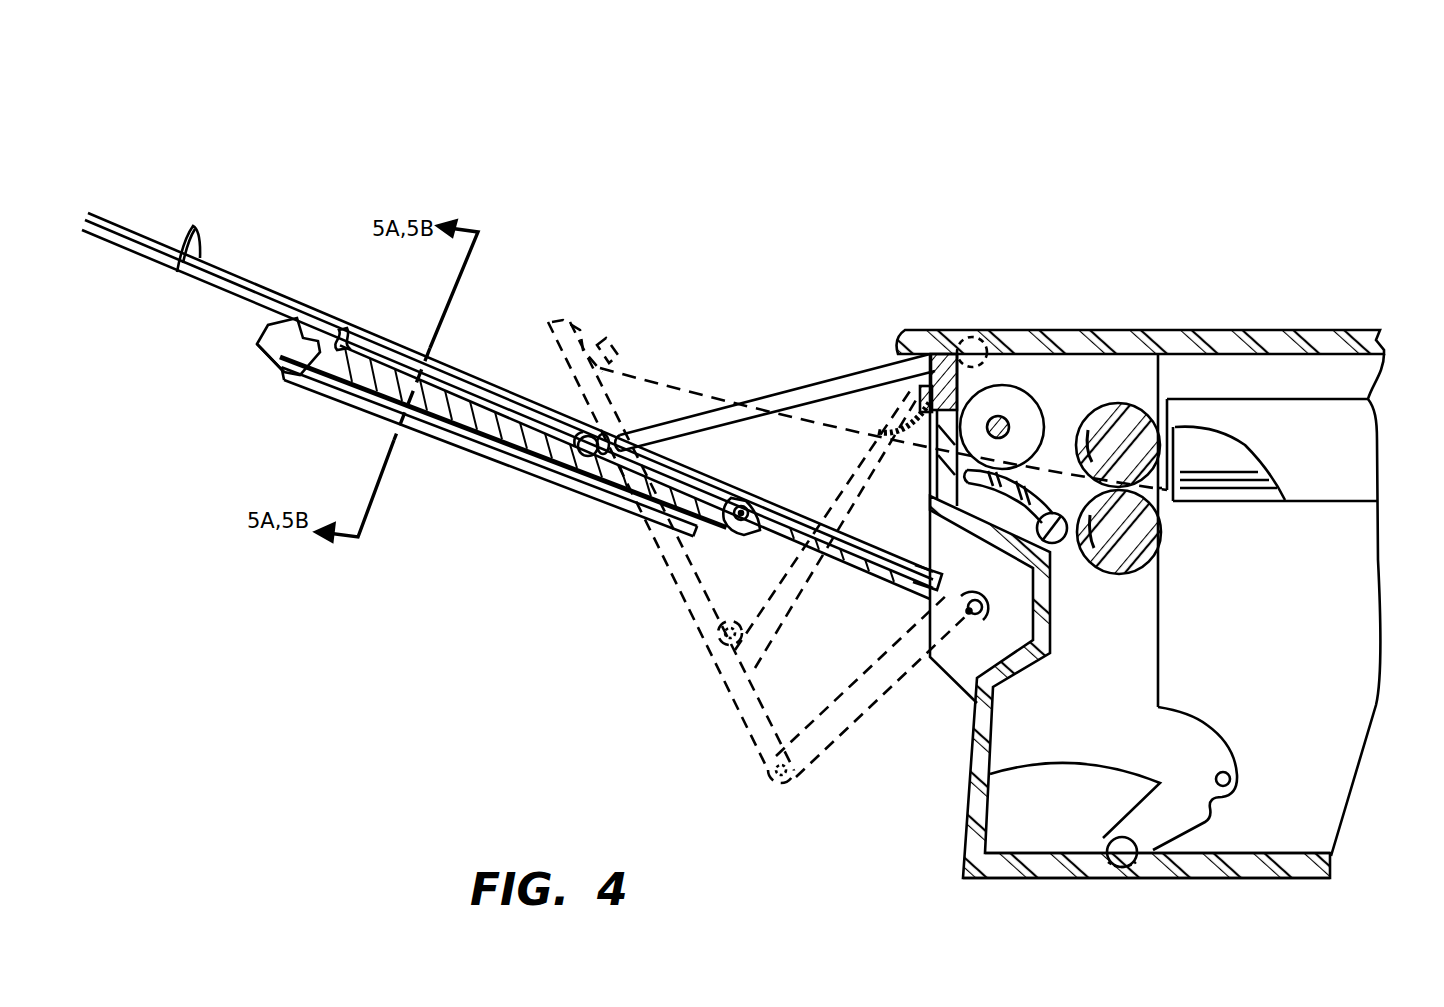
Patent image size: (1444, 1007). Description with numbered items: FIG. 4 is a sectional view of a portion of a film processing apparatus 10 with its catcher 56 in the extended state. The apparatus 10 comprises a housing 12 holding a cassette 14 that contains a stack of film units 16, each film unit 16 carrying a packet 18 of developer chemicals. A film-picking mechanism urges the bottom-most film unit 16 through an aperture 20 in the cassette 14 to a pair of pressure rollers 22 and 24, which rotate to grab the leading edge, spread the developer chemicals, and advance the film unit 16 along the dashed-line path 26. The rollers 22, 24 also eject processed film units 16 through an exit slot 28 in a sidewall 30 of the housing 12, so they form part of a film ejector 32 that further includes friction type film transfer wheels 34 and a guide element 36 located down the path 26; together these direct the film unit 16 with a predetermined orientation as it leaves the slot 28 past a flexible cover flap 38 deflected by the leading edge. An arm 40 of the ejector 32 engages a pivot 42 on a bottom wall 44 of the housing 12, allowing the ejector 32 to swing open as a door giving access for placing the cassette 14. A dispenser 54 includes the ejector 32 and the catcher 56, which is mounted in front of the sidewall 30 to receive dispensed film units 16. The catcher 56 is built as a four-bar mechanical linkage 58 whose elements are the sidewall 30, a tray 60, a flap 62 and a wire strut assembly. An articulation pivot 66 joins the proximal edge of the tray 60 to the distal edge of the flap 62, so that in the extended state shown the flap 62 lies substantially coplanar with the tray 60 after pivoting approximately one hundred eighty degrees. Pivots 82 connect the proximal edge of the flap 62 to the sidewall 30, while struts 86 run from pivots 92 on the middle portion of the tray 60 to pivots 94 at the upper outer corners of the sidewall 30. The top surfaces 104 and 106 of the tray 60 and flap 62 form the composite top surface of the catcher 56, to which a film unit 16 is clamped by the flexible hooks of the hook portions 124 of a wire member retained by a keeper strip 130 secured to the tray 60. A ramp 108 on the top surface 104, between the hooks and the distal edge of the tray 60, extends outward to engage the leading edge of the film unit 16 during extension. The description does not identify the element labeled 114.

The film processing apparatus 10 is at (1407, 673).
The housing 12 is at (1262, 330).
The cassette 14 is at (1331, 502).
The film unit 16 is at (198, 226).
The packet 18 is at (120, 250).
The aperture 20 is at (1175, 486).
The pressure roller 22 is at (1110, 405).
The pressure roller 24 is at (1110, 574).
The path 26 is at (690, 368).
The exit slot 28 is at (934, 462).
The sidewall 30 is at (966, 824).
The film ejector 32 is at (1168, 556).
The film transfer wheel 34 is at (1030, 390).
The guide element 36 is at (992, 490).
The flexible cover flap 38 is at (884, 428).
The arm 40 is at (1213, 818).
The pivot 42 is at (1132, 874).
The bottom wall 44 is at (1248, 880).
The dispenser 54 is at (842, 316).
The catcher 56 is at (491, 475).
The four-bar mechanical linkage 58 is at (857, 736).
The tray 60 is at (478, 475).
The flap 62 is at (905, 592).
The articulation pivot 66 is at (734, 524).
The pivot 82 is at (985, 595).
The strut 86 is at (797, 388).
The pivot 92 is at (578, 454).
The pivot 94 is at (974, 330).
The top surface 104 is at (287, 378).
The top surface 106 is at (766, 504).
The ramp 108 is at (287, 330).
The guide rod 114 is at (836, 568).
The hook portion 124 is at (352, 336).
The keeper strip 130 is at (476, 481).